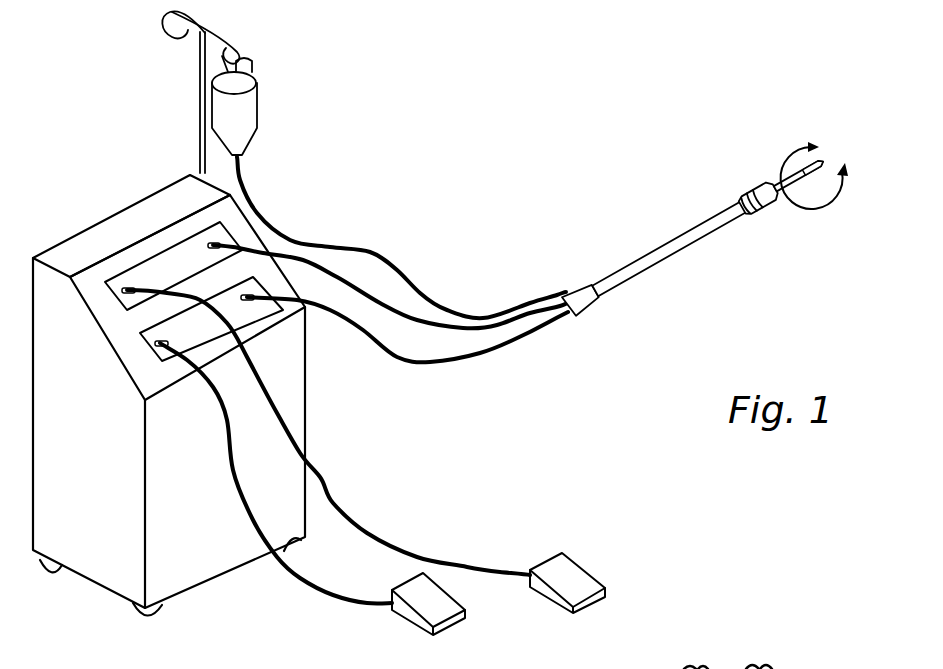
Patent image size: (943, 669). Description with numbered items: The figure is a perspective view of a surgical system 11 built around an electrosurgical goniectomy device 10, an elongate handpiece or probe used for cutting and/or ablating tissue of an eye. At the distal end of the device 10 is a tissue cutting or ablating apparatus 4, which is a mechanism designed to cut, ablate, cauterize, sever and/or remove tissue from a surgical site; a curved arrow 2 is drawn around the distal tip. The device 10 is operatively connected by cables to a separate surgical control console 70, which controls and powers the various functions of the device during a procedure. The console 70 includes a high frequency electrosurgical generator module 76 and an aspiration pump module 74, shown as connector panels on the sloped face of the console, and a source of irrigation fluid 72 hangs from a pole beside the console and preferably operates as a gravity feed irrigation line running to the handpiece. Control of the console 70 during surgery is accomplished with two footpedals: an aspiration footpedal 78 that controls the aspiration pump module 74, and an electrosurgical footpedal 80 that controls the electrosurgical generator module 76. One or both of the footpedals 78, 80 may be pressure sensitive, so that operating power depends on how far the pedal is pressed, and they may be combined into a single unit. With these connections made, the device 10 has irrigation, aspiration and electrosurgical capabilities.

The rotation direction arrow 2 is at (822, 172).
The tissue cutting or ablating apparatus 4 is at (810, 196).
The cutting or ablating device 10 is at (685, 218).
The surgical system 11 is at (168, 162).
The surgical control console 70 is at (197, 558).
The source of irrigation fluid 72 is at (242, 123).
The aspiration pump module 74 is at (143, 278).
The high frequency electrosurgical generator module 76 is at (228, 300).
The aspiration footpedal 78 is at (573, 582).
The electrosurgical footpedal 80 is at (427, 603).